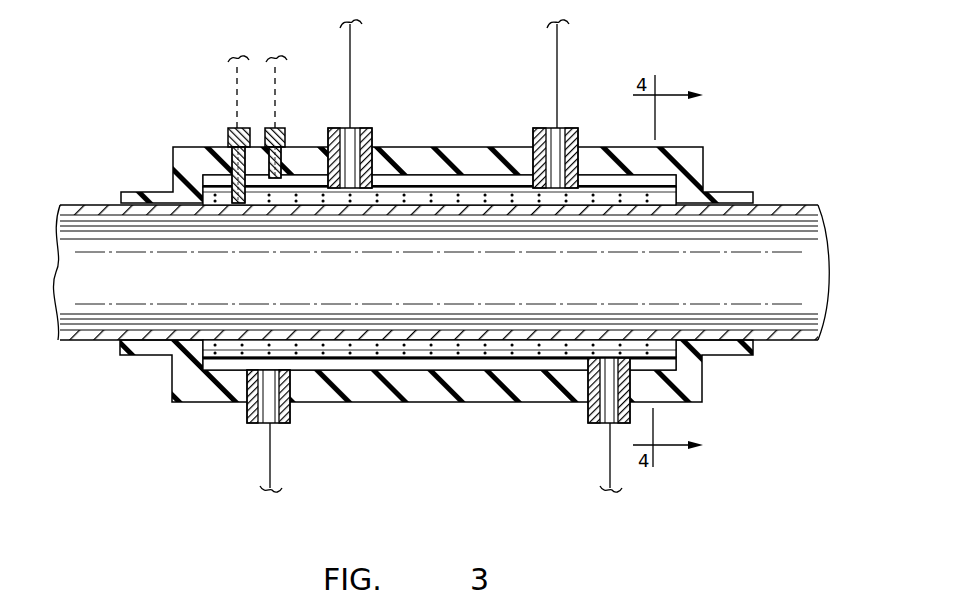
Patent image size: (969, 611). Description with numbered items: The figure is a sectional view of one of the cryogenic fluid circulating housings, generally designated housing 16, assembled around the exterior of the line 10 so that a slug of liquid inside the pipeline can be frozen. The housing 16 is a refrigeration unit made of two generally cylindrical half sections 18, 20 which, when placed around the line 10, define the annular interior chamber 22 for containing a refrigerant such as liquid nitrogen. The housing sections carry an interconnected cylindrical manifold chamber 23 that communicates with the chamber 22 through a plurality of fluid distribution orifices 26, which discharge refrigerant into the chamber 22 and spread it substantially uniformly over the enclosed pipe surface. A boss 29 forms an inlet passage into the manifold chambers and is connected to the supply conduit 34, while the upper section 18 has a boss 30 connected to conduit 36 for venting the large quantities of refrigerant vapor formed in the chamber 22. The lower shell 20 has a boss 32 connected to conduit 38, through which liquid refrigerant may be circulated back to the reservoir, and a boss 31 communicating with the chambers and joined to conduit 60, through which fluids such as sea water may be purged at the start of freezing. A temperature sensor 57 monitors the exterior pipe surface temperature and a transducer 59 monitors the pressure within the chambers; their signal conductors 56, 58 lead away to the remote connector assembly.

The line 10 is at (790, 203).
The housing 16 is at (436, 256).
The half section 18 is at (685, 147).
The half section 20 is at (688, 402).
The interior chamber 22 is at (370, 345).
The manifold chamber 23 is at (385, 370).
The fluid distribution orifices 26 is at (525, 201).
The boss 29 is at (580, 140).
The boss 30 is at (373, 133).
The boss 31 is at (588, 410).
The boss 32 is at (248, 412).
The conduit 34 is at (558, 117).
The conduit 36 is at (352, 95).
The conduit 38 is at (270, 472).
The signal conductor 56 is at (235, 101).
The temperature sensor 57 is at (229, 157).
The signal conductor 58 is at (275, 99).
The transducer 59 is at (286, 137).
The conduit 60 is at (610, 471).